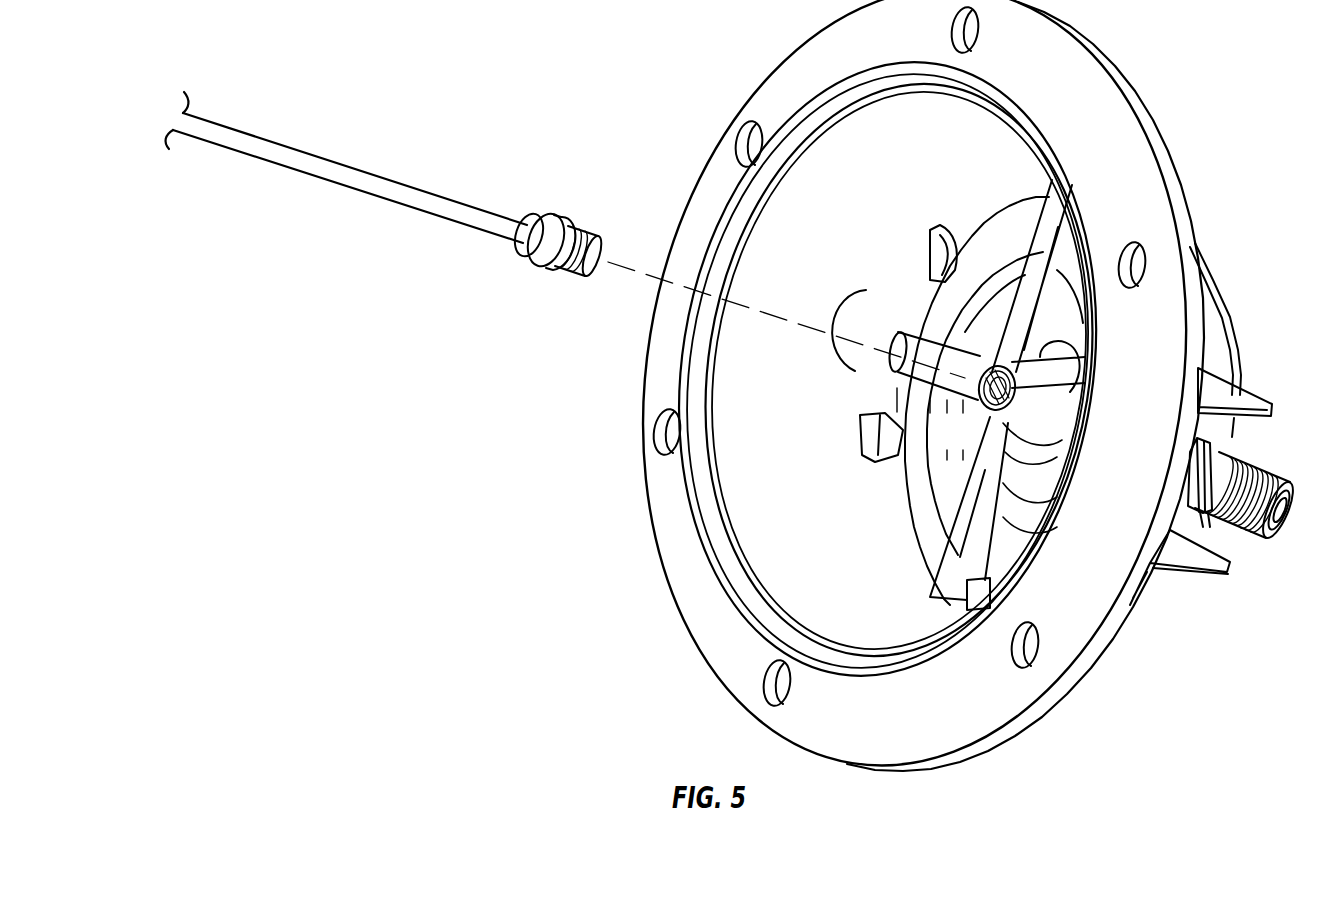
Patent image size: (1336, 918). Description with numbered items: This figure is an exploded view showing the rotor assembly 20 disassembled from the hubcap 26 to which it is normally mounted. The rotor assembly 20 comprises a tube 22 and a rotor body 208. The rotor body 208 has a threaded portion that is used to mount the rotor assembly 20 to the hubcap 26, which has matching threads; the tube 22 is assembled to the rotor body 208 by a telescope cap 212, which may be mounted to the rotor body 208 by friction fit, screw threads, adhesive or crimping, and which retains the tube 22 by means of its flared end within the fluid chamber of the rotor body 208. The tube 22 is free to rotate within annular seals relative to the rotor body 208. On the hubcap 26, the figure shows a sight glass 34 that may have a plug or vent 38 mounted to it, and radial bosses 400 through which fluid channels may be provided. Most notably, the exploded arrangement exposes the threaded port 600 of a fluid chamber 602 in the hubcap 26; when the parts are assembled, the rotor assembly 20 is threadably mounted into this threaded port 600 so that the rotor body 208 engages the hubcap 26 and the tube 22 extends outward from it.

The rotor assembly 20 is at (578, 180).
The tube 22 is at (290, 142).
The hubcap 26 is at (660, 552).
The sight glass 34 is at (967, 444).
The plug or vent 38 is at (1073, 311).
The rotor body 208 is at (549, 273).
The telescope cap 212 is at (523, 255).
The radial bosses 400 is at (852, 366).
The threaded port 600 is at (941, 486).
The fluid chamber 602 is at (983, 358).